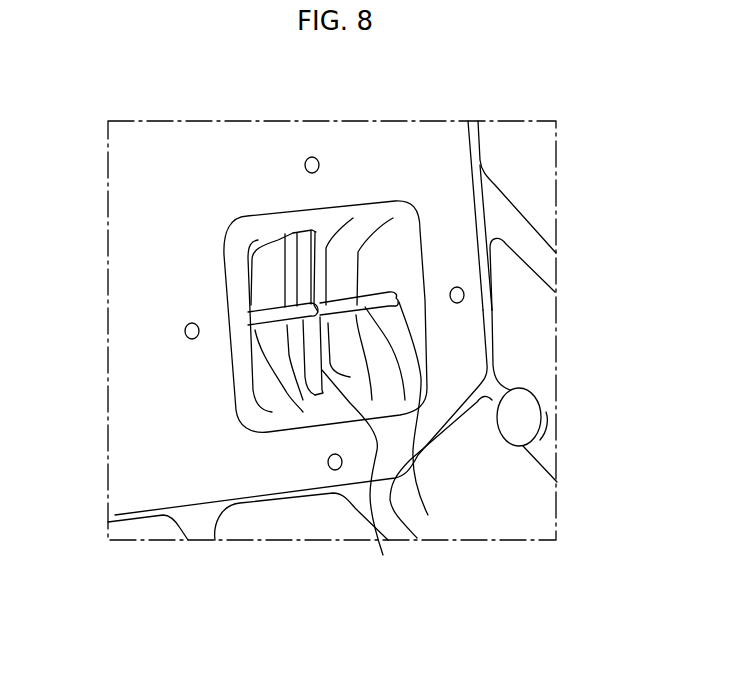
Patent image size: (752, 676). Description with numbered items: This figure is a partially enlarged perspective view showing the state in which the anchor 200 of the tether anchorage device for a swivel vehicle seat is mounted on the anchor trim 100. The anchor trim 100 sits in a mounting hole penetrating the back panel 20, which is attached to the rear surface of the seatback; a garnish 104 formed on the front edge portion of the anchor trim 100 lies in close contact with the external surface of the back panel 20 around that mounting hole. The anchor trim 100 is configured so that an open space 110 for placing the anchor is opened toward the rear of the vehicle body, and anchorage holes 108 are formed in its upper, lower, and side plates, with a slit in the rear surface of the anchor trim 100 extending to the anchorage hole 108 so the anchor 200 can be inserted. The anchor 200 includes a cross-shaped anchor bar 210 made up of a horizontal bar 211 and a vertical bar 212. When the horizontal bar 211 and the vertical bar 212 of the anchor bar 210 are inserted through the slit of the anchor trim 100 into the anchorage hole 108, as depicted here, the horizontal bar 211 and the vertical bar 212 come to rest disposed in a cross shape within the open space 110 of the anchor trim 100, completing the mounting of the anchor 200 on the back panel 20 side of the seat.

The back panel 20 is at (252, 467).
The anchor trim 100 is at (230, 390).
The garnish 104 is at (237, 290).
The anchorage hole 108 is at (400, 283).
The open space 110 is at (343, 260).
The anchor 200 is at (275, 287).
The anchor bar 210 is at (411, 468).
The horizontal bar 211 is at (448, 451).
The vertical bar 212 is at (383, 555).